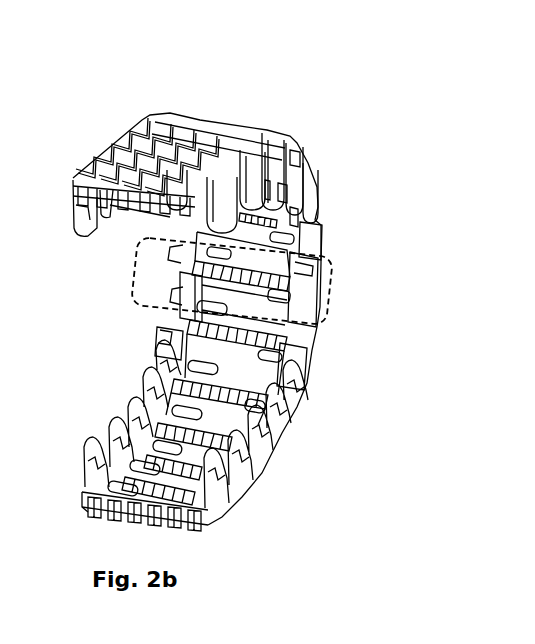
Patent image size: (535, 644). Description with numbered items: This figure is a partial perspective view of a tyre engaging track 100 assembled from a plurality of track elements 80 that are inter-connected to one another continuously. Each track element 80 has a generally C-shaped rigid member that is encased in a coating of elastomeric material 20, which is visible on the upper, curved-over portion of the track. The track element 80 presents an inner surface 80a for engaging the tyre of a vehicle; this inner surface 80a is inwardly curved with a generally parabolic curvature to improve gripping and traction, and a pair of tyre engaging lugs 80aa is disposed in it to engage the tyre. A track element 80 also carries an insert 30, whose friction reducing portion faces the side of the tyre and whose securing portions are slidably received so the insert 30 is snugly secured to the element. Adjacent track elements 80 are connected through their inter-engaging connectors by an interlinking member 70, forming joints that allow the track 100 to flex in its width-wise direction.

The tyre engaging track 100 is at (96, 136).
The coating of elastomeric material 20 is at (193, 132).
The track element 80 is at (143, 283).
The inner surface 80a is at (227, 297).
The tyre engaging lugs 80aa is at (277, 297).
The insert 30 is at (180, 298).
The interlinking member 70 is at (205, 522).